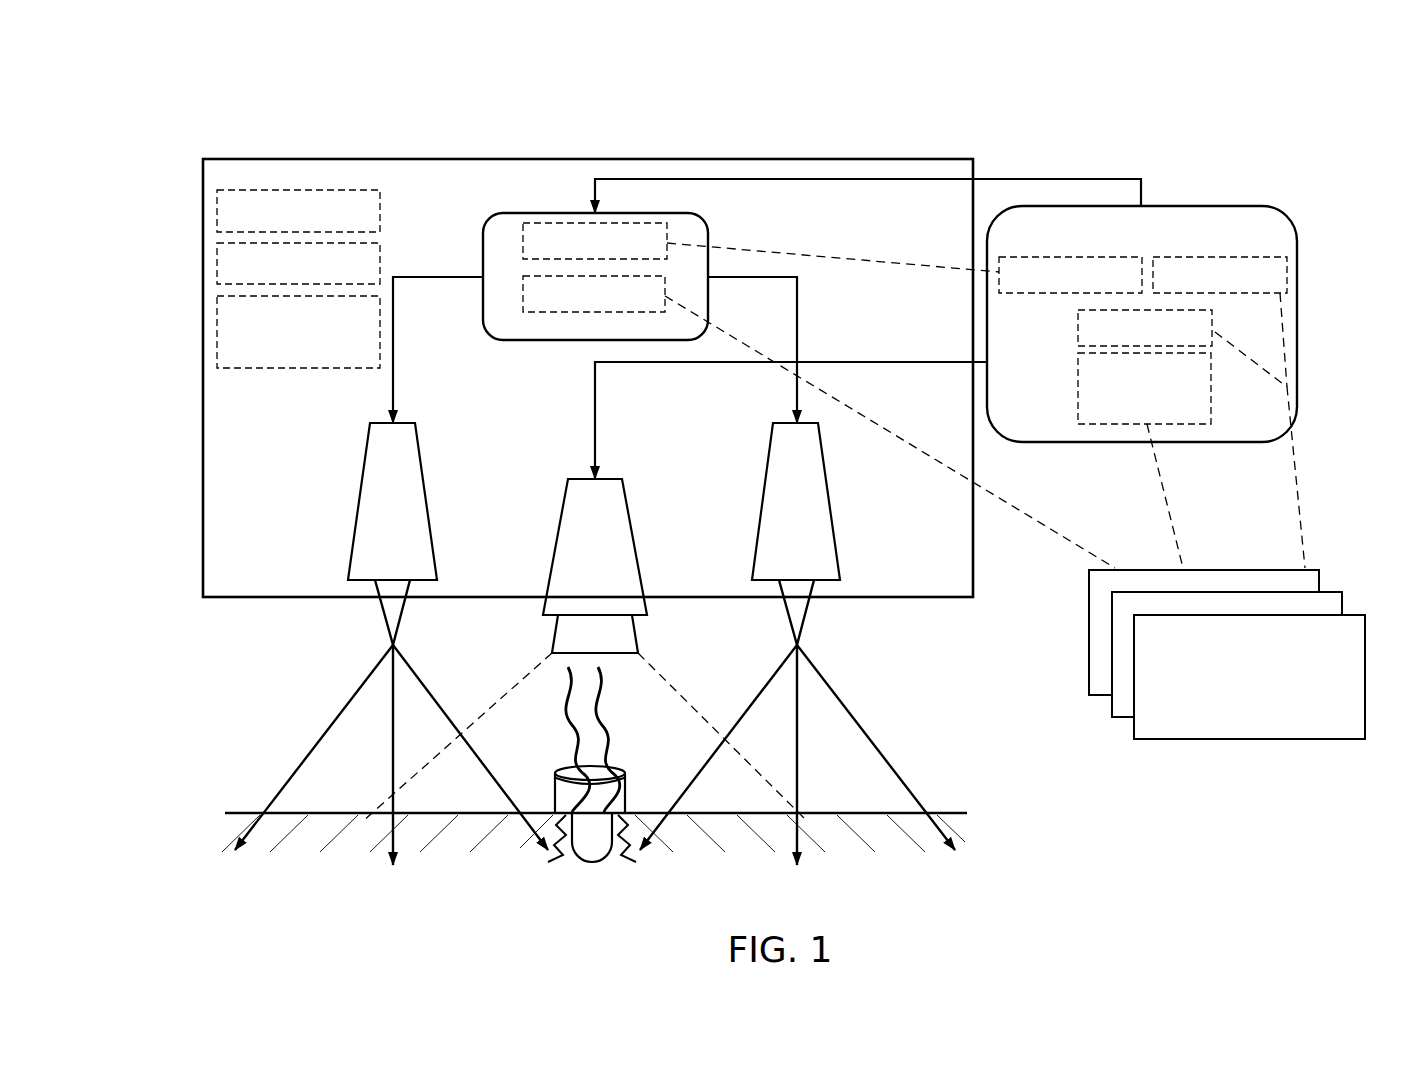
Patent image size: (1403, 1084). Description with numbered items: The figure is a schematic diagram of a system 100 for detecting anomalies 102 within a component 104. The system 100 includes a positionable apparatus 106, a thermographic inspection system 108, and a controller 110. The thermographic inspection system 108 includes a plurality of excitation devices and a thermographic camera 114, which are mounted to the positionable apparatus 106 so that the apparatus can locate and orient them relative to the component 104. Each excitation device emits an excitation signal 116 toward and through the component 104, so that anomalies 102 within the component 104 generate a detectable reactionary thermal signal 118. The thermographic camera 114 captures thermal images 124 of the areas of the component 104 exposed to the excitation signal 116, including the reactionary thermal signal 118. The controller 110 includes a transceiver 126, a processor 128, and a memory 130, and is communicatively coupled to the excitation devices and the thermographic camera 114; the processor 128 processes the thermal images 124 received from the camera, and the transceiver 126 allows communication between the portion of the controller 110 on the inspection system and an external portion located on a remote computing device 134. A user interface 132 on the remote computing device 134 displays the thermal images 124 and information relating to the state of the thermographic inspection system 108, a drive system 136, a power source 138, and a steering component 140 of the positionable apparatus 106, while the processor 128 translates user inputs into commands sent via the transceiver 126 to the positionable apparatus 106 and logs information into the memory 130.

The system 100 is at (337, 98).
The anomalies 102 is at (590, 866).
The component 104 is at (900, 870).
The positionable apparatus 106 is at (372, 158).
The thermographic inspection system 108 is at (335, 423).
The controller 110 is at (710, 237).
The thermographic camera 114 is at (637, 535).
The excitation signal 116 is at (815, 774).
The reactionary thermal signal 118 is at (602, 743).
The thermal images 124 is at (1248, 742).
The transceiver 126 is at (1068, 255).
The processor 128 is at (1216, 325).
The memory 130 is at (1220, 255).
The user interface 132 is at (1176, 426).
The remote computing device 134 is at (1038, 228).
The drive system 136 is at (217, 263).
The power source 138 is at (217, 210).
The steering component 140 is at (217, 330).